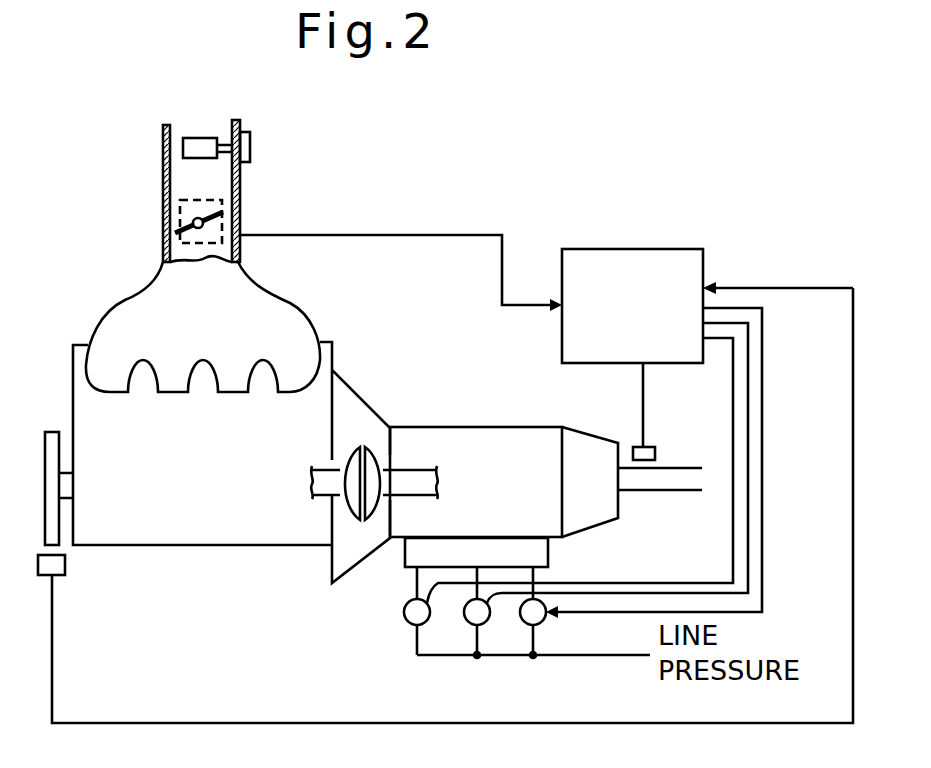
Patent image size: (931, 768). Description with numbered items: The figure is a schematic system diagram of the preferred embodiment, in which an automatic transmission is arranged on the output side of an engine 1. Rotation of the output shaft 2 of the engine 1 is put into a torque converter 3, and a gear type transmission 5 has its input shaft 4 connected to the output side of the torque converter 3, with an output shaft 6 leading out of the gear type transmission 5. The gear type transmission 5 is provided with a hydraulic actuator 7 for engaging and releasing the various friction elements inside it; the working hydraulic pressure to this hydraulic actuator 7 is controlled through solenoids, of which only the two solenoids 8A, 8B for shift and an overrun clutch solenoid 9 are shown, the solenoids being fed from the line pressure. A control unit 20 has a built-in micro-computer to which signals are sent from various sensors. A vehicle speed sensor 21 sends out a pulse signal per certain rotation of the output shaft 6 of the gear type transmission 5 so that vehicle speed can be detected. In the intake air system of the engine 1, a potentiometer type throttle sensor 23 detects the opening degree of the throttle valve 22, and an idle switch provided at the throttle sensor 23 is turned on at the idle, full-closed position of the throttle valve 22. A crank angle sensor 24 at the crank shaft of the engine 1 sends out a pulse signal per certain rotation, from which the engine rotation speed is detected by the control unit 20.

The engine 1 is at (304, 328).
The output shaft 2 is at (318, 492).
The torque converter 3 is at (360, 447).
The input shaft 4 is at (420, 470).
The gear type transmission 5 is at (508, 496).
The output shaft 6 is at (665, 475).
The hydraulic actuator 7 is at (550, 552).
The solenoid for shift 8A is at (405, 625).
The solenoid for shift 8B is at (481, 627).
The overrun clutch solenoid 9 is at (556, 611).
The control unit 20 is at (683, 249).
The vehicle speed sensor 21 is at (635, 447).
The throttle valve 22 is at (163, 220).
The throttle sensor 23 is at (240, 213).
The crank angle sensor 24 is at (66, 578).